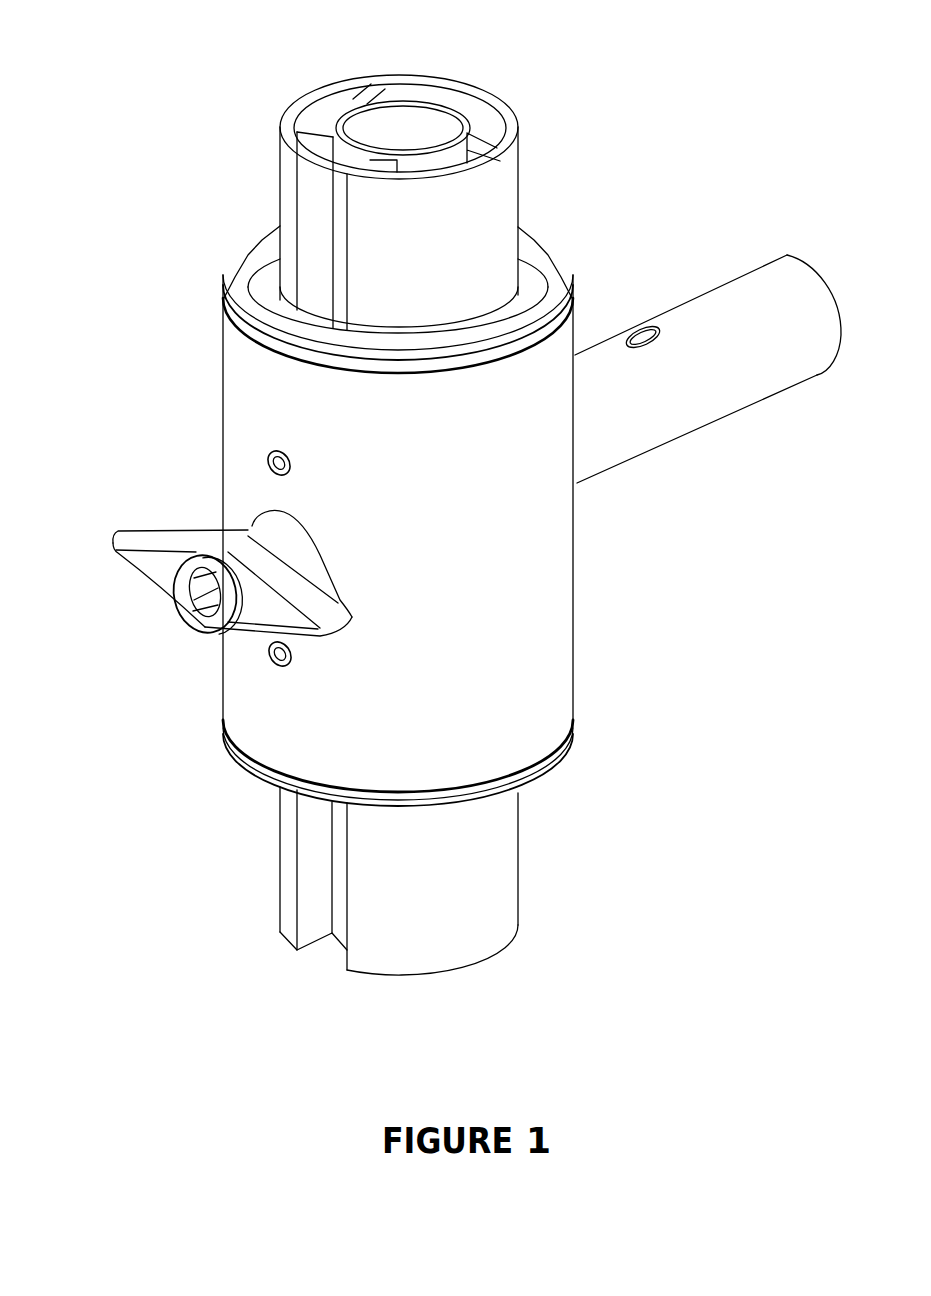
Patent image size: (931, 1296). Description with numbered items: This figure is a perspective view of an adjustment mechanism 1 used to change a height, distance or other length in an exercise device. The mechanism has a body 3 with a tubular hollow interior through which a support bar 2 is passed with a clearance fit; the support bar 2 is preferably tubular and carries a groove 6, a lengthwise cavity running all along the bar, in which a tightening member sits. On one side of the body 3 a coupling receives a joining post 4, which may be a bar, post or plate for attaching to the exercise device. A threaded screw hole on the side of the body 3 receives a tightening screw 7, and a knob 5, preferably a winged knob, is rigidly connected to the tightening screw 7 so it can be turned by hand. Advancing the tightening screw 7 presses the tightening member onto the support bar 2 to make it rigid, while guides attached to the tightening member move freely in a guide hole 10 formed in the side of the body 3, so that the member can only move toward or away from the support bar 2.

The adjustment mechanism 1 is at (455, 495).
The support bar 2 is at (495, 495).
The body 3 is at (460, 552).
The joining post 4 is at (645, 393).
The knob 5 is at (245, 606).
The groove 6 is at (332, 224).
The tightening screw 7 is at (210, 624).
The guide hole 10 is at (276, 452).